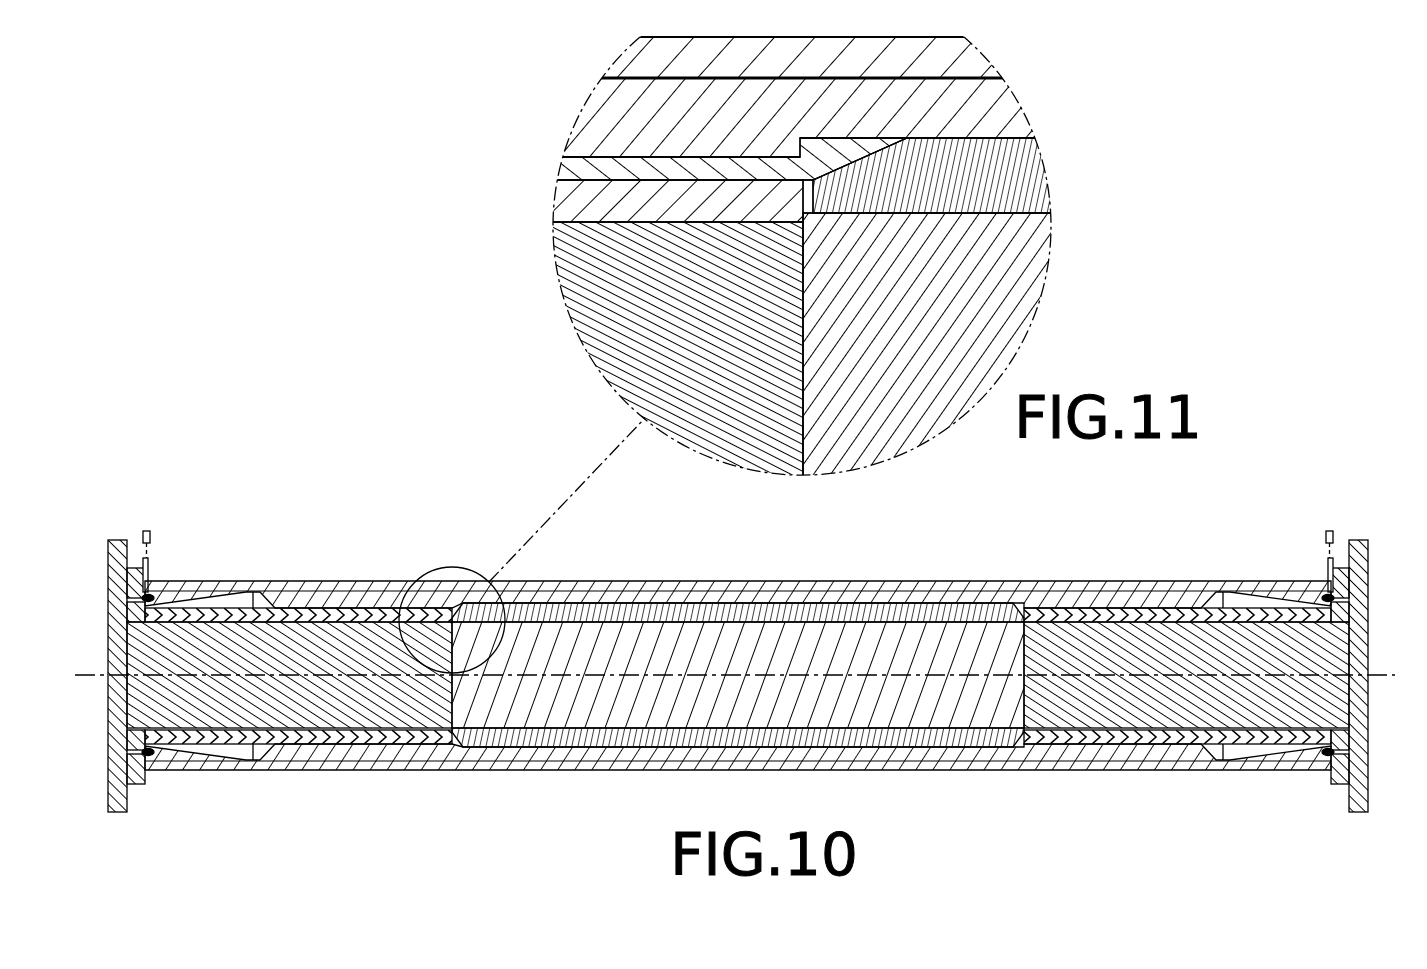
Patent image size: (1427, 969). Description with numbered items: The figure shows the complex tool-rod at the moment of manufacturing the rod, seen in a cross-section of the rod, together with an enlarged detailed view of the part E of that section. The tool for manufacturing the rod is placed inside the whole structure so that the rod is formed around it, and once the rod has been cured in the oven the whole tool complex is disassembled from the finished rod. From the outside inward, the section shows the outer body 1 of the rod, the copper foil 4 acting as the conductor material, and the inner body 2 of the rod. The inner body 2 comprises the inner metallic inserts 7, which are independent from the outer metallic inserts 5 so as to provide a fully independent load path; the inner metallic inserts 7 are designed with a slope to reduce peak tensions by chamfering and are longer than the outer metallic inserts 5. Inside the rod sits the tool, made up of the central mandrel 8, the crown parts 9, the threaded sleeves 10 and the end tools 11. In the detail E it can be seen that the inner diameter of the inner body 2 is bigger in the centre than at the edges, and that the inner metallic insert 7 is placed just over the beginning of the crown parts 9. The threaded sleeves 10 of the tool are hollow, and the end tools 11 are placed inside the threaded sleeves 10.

In FIG. 11, the outer body 1 is at (947, 60).
In FIG. 10, the outer body 1 is at (568, 581).
In FIG. 11, the inner body 2 is at (997, 117).
In FIG. 10, the inner body 2 is at (813, 598).
In FIG. 11, the copper foil 4 is at (650, 77).
In FIG. 10, the copper foil 4 is at (660, 591).
In FIG. 10, the outer metallic insert 5 is at (242, 602).
In FIG. 11, the inner metallic insert 7 is at (775, 142).
In FIG. 10, the inner metallic insert 7 is at (262, 597).
In FIG. 11, the central mandrel 8 is at (1010, 285).
In FIG. 10, the central mandrel 8 is at (920, 700).
In FIG. 11, the crown part 9 is at (1017, 167).
In FIG. 10, the crown part 9 is at (627, 745).
In FIG. 11, the threaded sleeve 10 is at (580, 223).
In FIG. 10, the threaded sleeve 10 is at (1187, 737).
In FIG. 11, the end tool 11 is at (730, 423).
In FIG. 10, the end tool 11 is at (128, 790).
In FIG. 11, the part E is at (577, 333).
In FIG. 10, the part E is at (445, 571).